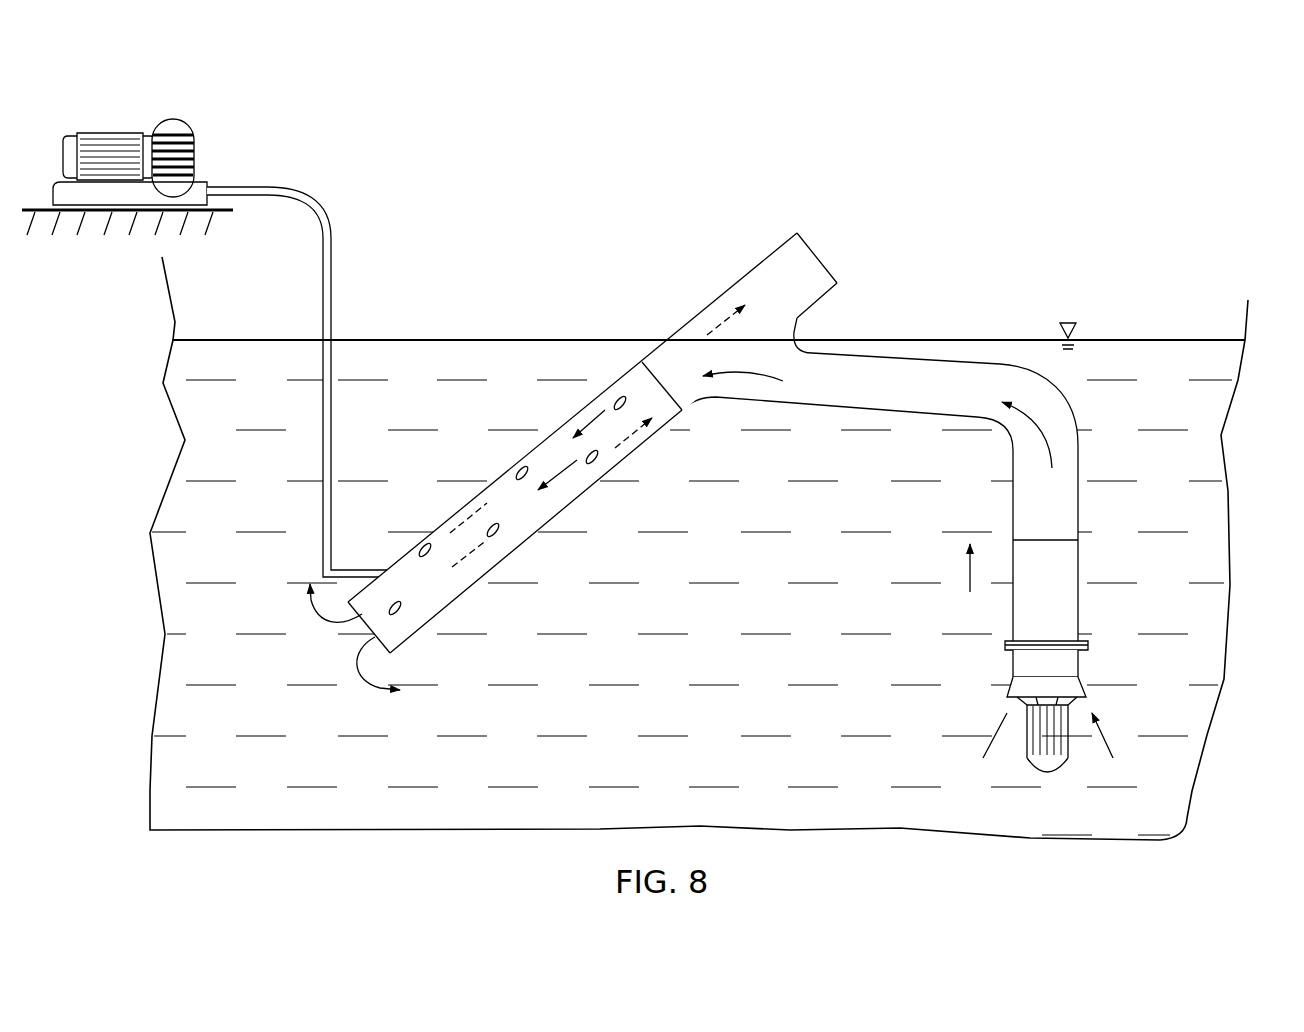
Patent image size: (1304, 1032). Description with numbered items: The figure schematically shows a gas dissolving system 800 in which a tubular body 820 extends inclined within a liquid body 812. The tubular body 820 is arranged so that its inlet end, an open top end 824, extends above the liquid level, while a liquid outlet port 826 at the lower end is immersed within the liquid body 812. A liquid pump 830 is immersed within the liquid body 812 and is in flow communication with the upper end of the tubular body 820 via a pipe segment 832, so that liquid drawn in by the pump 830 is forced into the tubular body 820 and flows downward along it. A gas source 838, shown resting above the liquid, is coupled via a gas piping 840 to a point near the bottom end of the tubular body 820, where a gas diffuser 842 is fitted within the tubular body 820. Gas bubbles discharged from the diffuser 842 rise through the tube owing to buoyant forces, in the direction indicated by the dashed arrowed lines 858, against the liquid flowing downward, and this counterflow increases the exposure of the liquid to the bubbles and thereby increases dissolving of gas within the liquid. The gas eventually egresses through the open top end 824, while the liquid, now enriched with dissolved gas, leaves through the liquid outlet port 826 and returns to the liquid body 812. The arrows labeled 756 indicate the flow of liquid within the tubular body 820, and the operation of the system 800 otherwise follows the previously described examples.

The gas dissolving system 800 is at (1073, 198).
The liquid body 812 is at (1158, 365).
The tubular body 820 is at (618, 471).
The open top end 824 is at (803, 273).
The liquid outlet port 826 is at (397, 648).
The liquid pump 830 is at (1052, 747).
The pipe segment 832 is at (870, 387).
The gas source 838 is at (107, 132).
The gas piping 840 is at (325, 383).
The gas diffuser 842 is at (425, 572).
The dashed arrowed lines 858 is at (655, 433).
The liquid flow 756 is at (556, 478).